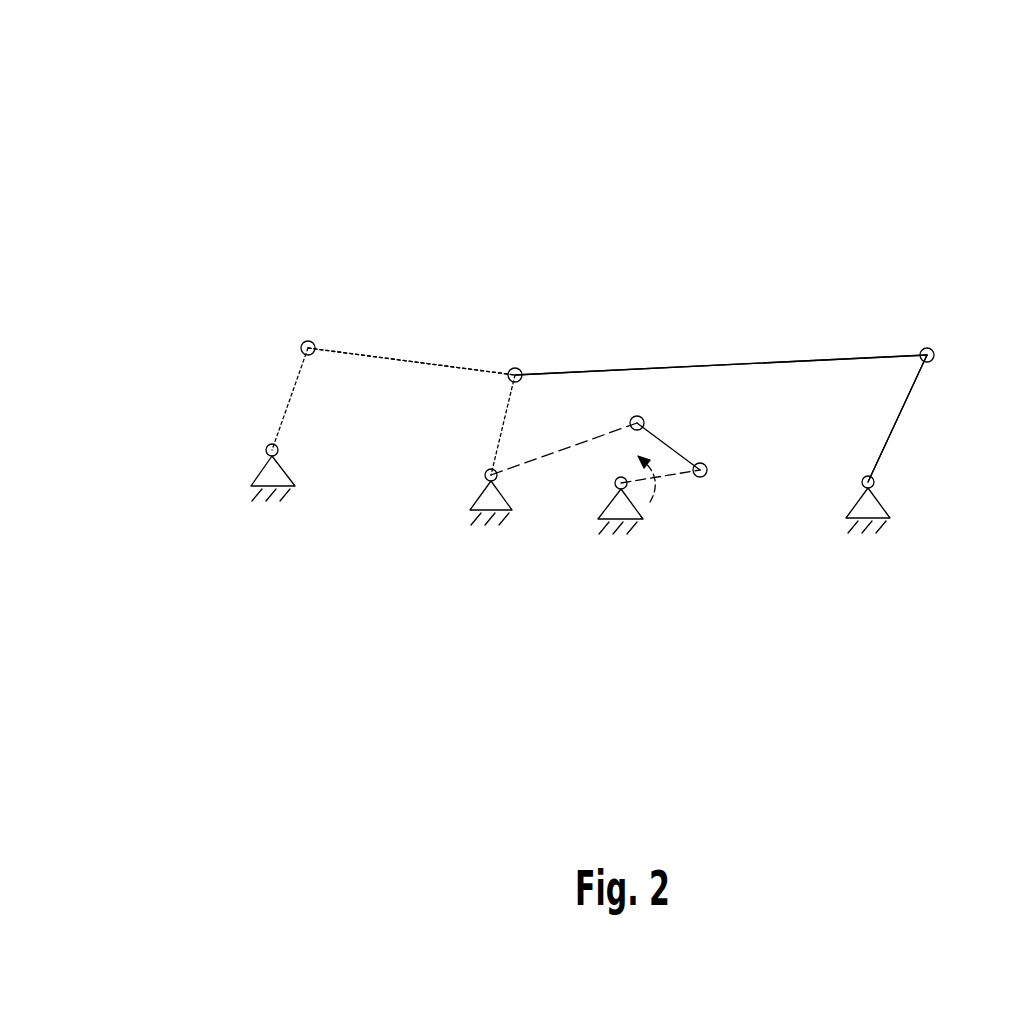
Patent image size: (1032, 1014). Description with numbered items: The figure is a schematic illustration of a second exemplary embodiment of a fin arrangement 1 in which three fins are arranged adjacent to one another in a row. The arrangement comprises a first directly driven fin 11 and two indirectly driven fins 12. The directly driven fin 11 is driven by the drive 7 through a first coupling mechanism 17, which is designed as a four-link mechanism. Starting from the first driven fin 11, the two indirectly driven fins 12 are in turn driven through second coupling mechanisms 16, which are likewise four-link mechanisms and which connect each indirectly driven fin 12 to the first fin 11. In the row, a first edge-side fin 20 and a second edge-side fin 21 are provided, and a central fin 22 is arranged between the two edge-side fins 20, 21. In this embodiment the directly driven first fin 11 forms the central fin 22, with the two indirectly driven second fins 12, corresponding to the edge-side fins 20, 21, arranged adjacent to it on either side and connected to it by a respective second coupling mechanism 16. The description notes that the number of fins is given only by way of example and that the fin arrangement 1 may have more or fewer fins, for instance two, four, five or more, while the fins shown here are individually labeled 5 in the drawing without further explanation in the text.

The fin arrangement 1 is at (777, 130).
The pivot lever 5 is at (276, 470).
The drive 7 is at (623, 507).
The first directly driven fin 11 is at (513, 504).
The indirectly driven fin 12 is at (257, 477).
The second coupling mechanism 16 is at (388, 357).
The first coupling mechanism 17 is at (688, 442).
The first edge-side fin 20 is at (295, 480).
The second edge-side fin 21 is at (890, 508).
The central fin 22 is at (475, 497).